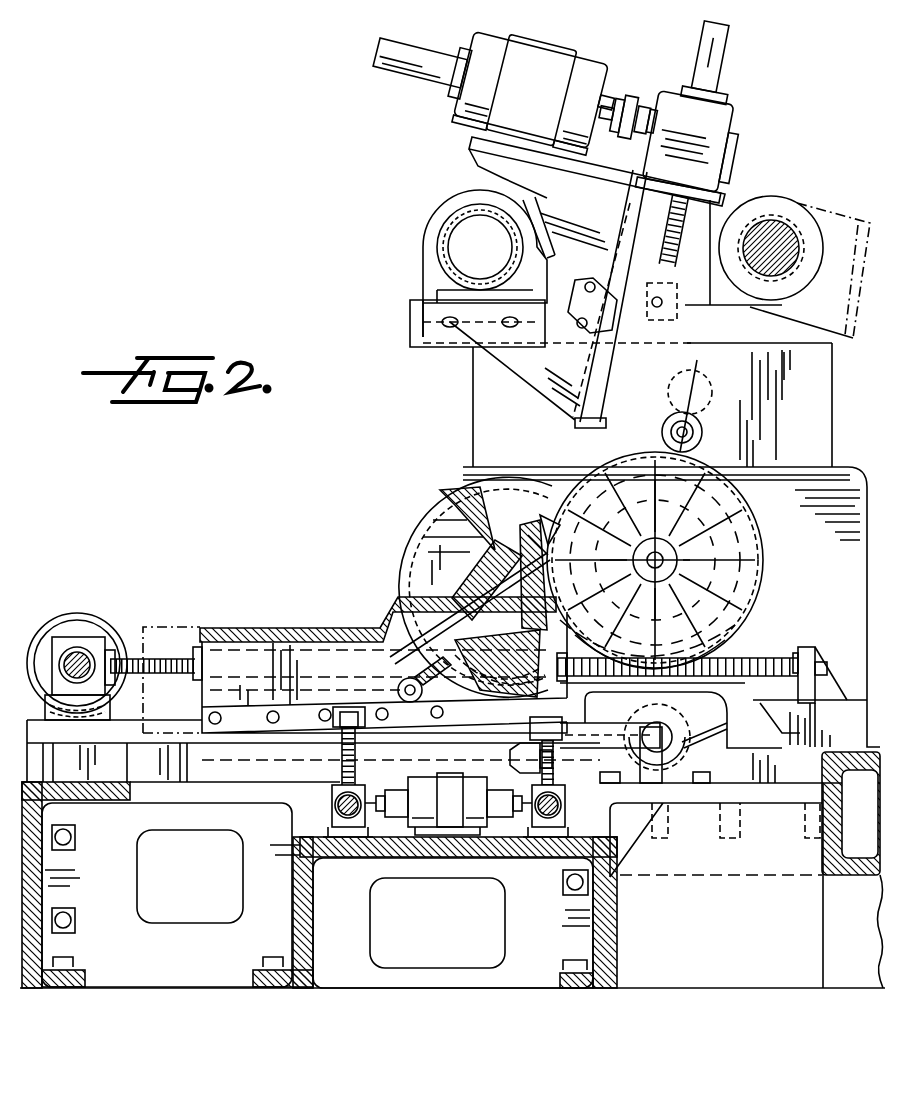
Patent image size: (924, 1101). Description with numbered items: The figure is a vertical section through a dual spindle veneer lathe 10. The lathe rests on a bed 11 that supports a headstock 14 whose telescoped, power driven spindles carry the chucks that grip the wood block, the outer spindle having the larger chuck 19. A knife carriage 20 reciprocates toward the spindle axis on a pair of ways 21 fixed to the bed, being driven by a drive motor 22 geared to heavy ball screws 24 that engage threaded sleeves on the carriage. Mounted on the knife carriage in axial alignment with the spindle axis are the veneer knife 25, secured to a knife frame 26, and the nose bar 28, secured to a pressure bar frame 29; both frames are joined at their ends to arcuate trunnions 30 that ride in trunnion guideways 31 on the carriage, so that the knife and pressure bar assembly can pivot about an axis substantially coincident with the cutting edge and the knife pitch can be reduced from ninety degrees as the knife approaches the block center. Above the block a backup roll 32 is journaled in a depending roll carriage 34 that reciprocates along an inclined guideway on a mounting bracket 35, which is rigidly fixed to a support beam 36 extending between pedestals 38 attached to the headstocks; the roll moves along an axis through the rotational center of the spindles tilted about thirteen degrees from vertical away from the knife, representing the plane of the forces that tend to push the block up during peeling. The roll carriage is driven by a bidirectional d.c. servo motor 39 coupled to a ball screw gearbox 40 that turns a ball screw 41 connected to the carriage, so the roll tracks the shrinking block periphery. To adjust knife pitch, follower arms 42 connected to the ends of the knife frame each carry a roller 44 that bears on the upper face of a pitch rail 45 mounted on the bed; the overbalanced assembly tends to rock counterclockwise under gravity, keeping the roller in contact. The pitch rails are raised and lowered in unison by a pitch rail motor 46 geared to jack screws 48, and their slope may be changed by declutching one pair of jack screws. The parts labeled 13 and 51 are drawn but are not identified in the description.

The veneer lathe 10 is at (398, 451).
The bed 11 is at (226, 984).
The grinding wheel rim 13 is at (760, 517).
The headstock 14 is at (826, 471).
The chuck 19 is at (755, 553).
The knife carriage 20 is at (272, 626).
The ways 21 is at (70, 738).
The drive motor 22 is at (86, 613).
The ball screws 24 is at (756, 656).
The veneer knife 25 is at (622, 548).
The knife frame 26 is at (437, 629).
The nose bar 28 is at (555, 521).
The pressure bar frame 29 is at (440, 506).
The arcuate trunnions 30 is at (422, 548).
The trunnion guideways 31 is at (580, 690).
The backup roll 32 is at (698, 428).
The backup roll carriage 34 is at (688, 323).
The mounting bracket 35 is at (555, 379).
The support beam 36 is at (436, 228).
The pedestals 38 is at (476, 420).
The bidirectional d.c. servo motor 39 is at (548, 63).
The ball screw gearbox 40 is at (722, 112).
The ball screw 41 is at (655, 217).
The follower arms 42 is at (430, 694).
The roller 44 is at (397, 692).
The pitch rail 45 is at (343, 700).
The pitch rail motor 46 is at (453, 828).
The jack screws 48 is at (352, 863).
The wheel spokes 51 is at (616, 575).